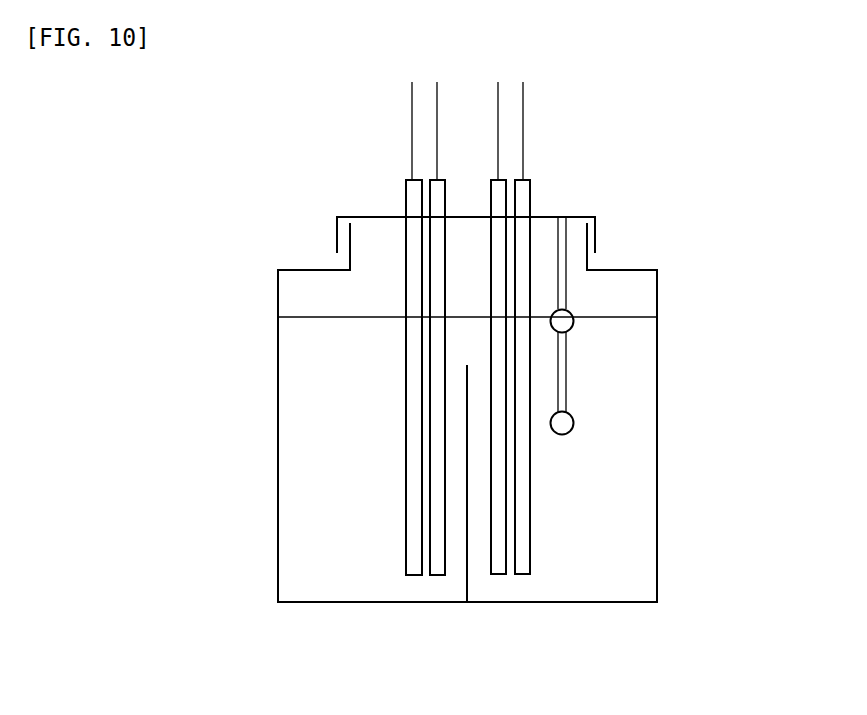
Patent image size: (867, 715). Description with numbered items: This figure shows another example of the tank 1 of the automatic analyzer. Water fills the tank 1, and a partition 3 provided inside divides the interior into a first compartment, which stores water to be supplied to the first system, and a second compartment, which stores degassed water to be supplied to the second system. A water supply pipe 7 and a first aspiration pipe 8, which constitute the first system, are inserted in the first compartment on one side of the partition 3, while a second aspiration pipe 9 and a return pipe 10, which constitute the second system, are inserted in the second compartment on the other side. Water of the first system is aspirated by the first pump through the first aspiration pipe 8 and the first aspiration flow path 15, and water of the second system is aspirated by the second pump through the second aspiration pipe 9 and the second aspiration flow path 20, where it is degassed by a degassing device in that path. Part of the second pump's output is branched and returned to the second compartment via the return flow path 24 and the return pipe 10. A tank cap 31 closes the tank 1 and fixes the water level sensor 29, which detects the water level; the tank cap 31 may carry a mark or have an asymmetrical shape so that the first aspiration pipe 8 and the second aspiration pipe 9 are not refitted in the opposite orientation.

The tank 1 is at (278, 552).
The partition 3 is at (467, 580).
The water supply pipe 7 is at (406, 495).
The first aspiration pipe 8 is at (429, 463).
The second aspiration pipe 9 is at (497, 468).
The return pipe 10 is at (529, 540).
The first aspiration flow path 15 is at (434, 150).
The second aspiration flow path 20 is at (498, 125).
The return flow path 24 is at (523, 150).
The water level sensor 29 is at (565, 308).
The tank cap 31 is at (335, 215).